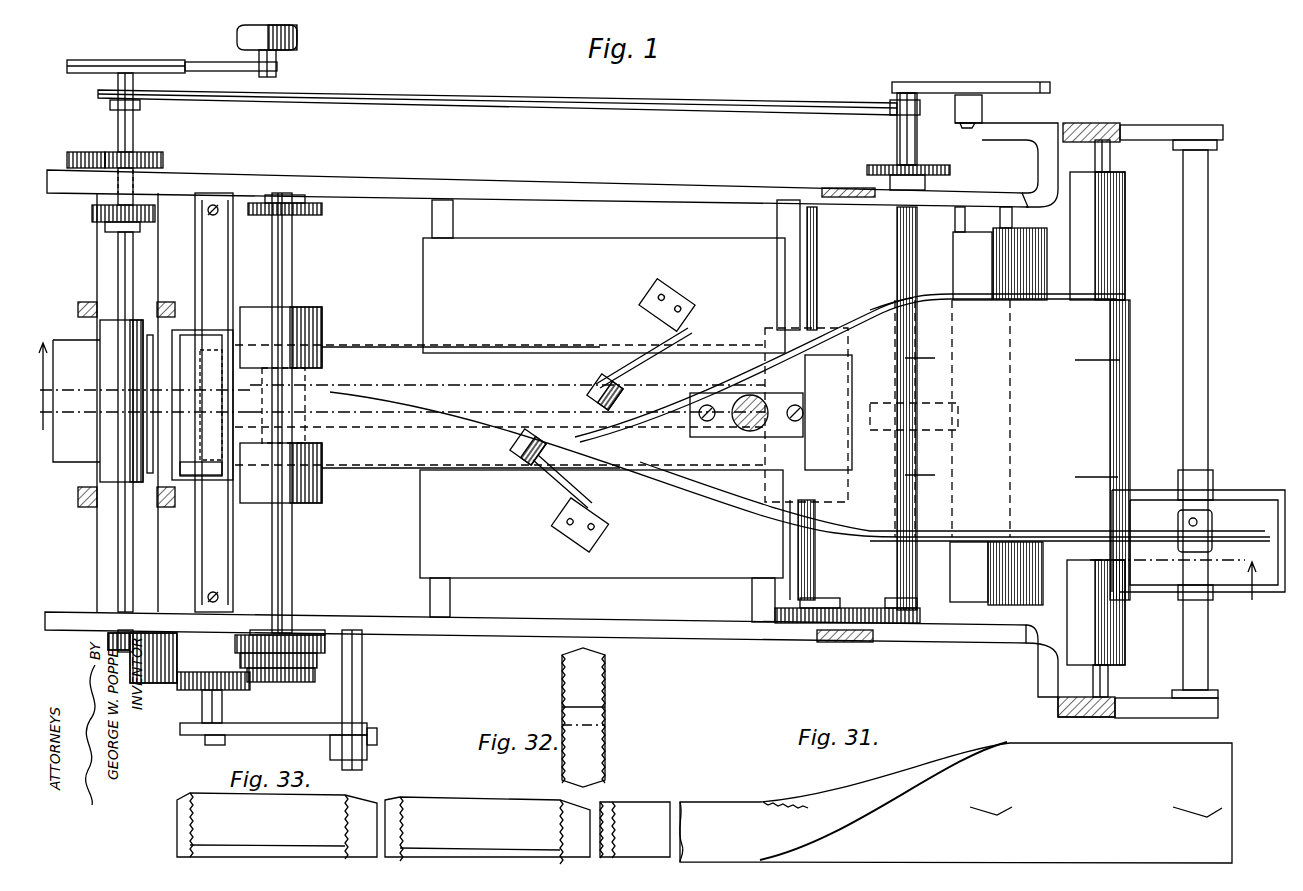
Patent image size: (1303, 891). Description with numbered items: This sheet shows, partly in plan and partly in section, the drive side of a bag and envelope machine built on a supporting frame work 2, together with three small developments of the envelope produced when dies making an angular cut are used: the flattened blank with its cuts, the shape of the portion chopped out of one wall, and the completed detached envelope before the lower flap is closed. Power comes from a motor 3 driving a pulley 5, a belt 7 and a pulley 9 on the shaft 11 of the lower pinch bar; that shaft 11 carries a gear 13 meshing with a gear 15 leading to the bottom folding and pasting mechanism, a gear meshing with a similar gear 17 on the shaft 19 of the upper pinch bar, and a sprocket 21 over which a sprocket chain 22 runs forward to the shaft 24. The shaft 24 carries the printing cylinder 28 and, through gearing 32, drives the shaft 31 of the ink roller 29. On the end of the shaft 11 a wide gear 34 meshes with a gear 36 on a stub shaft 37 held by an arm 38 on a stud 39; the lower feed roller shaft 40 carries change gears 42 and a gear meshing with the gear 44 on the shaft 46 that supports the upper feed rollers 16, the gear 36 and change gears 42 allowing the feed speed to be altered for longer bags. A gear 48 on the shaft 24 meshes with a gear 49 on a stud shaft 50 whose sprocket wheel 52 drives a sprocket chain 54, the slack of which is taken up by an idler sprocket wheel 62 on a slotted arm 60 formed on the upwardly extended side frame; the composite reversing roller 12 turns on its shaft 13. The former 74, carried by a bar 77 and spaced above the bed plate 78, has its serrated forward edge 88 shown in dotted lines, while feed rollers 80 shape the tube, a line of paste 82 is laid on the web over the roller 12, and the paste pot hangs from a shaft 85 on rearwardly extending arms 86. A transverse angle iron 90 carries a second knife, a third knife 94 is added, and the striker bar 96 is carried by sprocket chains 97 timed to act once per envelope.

The supporting frame work 2 is at (538, 168).
The motor 3 is at (298, 42).
The pulley 5 is at (278, 72).
The belt 7 is at (216, 64).
The pulley 9 is at (80, 62).
The shaft 11 is at (118, 80).
The reversing roller 12 is at (1115, 226).
The gear 13 is at (158, 152).
The gear 15 is at (80, 152).
The upper feed rollers 16 is at (323, 325).
The gear 17 is at (155, 218).
The shaft 19 is at (118, 256).
The sprocket 21 is at (140, 106).
The sprocket chain 22 is at (520, 99).
The shaft 24 is at (897, 141).
The printing cylinder 28 is at (935, 435).
The ink roller 29 is at (795, 325).
The shaft 31 is at (812, 560).
The gearing 32 is at (872, 608).
The wide gear 34 is at (155, 676).
The gear 36 is at (245, 690).
The stub shaft 37 is at (203, 709).
The arm 38 is at (266, 723).
The stud 39 is at (362, 686).
The shaft 40 is at (300, 632).
The change gears 42 is at (315, 673).
The gear 44 is at (323, 210).
The shaft 46 is at (293, 252).
The gear 48 is at (950, 168).
The gear 49 is at (926, 179).
The stud shaft 50 is at (890, 104).
The sprocket wheel 52 is at (907, 90).
The sprocket chain 54 is at (997, 82).
The slotted arm 60 is at (1015, 132).
The idler sprocket wheel 62 is at (964, 100).
The former 74 is at (543, 335).
The bar 77 is at (760, 408).
The bed plate 78 is at (601, 546).
The feed rollers 80 is at (590, 385).
The line of paste 82 is at (1035, 534).
The shaft 85 is at (1208, 442).
The arms 86 is at (1148, 126).
The serrated forward edge 88 is at (185, 478).
The angle iron 90 is at (212, 252).
The third knife 94 is at (125, 337).
The striker bar 96 is at (181, 330).
The sprocket chains 97 is at (80, 304).